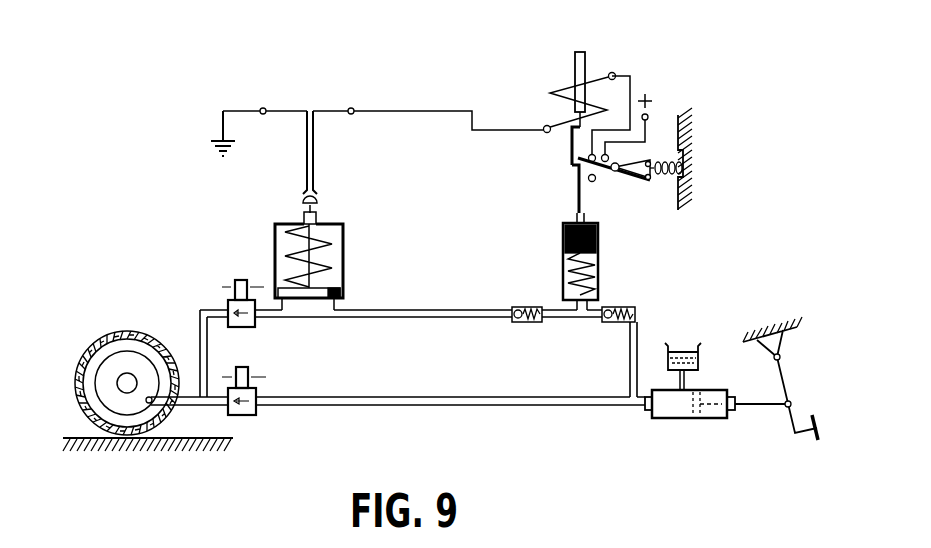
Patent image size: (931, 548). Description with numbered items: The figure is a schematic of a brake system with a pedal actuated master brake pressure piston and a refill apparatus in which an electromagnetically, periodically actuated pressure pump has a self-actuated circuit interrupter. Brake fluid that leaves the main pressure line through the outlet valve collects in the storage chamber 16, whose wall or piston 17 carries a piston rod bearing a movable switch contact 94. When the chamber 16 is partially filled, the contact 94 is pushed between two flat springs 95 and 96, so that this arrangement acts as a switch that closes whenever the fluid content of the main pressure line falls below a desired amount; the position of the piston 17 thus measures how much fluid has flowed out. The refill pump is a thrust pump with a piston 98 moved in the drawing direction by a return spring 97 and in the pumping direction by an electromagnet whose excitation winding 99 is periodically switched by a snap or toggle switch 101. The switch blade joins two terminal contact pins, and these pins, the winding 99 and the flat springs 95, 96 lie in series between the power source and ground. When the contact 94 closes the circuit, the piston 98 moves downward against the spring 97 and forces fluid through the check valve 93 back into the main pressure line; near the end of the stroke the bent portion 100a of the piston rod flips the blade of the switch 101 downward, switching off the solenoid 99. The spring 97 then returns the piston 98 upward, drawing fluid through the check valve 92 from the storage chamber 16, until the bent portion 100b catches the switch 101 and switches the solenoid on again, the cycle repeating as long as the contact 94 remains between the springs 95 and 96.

The storage chamber 16 is at (311, 316).
The storage chamber piston 17 is at (345, 293).
The check valve 92 is at (536, 323).
The check valve 93 is at (626, 323).
The movable switch contact 94 is at (319, 200).
The flat spring 95 is at (306, 153).
The flat spring 96 is at (314, 154).
The return spring 97 is at (590, 283).
The piston 98 is at (598, 228).
The excitation winding 99 is at (572, 88).
The bent portion of piston rod 100a is at (572, 130).
The bent portion of piston rod 100b is at (579, 173).
The snap switch 101 is at (627, 188).